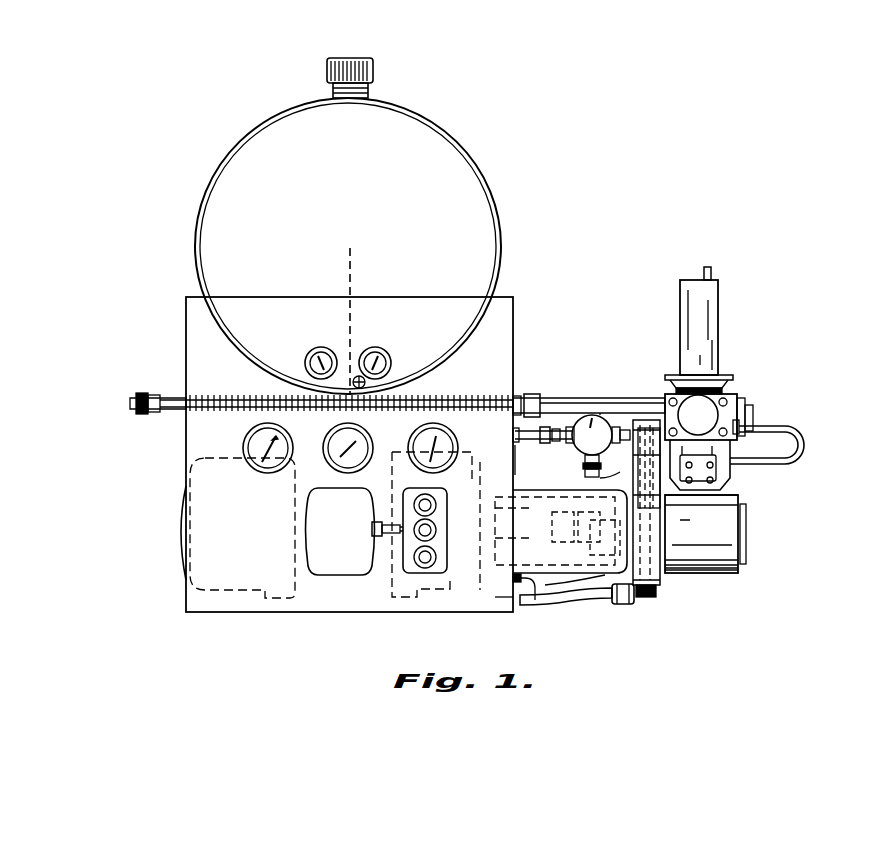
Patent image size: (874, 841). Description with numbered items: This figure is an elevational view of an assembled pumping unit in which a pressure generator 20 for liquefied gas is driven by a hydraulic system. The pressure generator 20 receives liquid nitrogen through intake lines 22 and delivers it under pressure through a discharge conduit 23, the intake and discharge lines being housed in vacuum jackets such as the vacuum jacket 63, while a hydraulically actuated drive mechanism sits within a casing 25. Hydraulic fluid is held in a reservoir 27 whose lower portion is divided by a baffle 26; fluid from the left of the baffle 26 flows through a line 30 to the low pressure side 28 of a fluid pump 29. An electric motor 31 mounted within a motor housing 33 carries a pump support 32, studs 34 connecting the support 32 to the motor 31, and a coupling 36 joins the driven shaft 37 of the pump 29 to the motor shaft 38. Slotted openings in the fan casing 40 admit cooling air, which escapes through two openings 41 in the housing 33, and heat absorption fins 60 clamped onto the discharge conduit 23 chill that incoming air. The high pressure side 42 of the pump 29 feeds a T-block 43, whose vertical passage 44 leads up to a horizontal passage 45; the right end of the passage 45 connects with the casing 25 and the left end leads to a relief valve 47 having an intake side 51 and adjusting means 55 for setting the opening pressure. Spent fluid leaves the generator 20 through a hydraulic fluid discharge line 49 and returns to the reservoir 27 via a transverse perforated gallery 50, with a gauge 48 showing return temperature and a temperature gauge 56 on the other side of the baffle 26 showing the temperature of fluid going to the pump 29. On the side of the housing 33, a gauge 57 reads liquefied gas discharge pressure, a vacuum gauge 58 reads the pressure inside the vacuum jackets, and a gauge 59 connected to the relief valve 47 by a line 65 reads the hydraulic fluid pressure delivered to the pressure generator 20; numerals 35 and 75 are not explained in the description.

The pressure generator 20 is at (737, 372).
The intake lines 22 is at (710, 269).
The discharge conduit 23 is at (148, 398).
The casing 25 is at (741, 418).
The baffle 26 is at (352, 262).
The reservoir 27 is at (443, 127).
The low pressure side 28 is at (656, 576).
The fluid pump 29 is at (712, 497).
The line 30 is at (538, 604).
The electric motor 31 is at (342, 574).
The pump support 32 is at (543, 600).
The motor housing 33 is at (230, 612).
The studs 34 is at (518, 598).
The fitting 35 is at (652, 590).
The coupling 36 is at (561, 531).
The driven shaft 37 is at (575, 606).
The shaft 38 is at (500, 598).
The fan casing 40 is at (180, 539).
The openings 41 is at (197, 297).
The high pressure side 42 is at (685, 510).
The T-block 43 is at (622, 470).
The vertical passage 44 is at (713, 470).
The horizontal passage 45 is at (646, 432).
The relief valve 47 is at (590, 417).
The gauge 48 is at (384, 362).
The hydraulic fluid discharge line 49 is at (798, 426).
The transverse perforated gallery 50 is at (365, 382).
The intake side 51 is at (598, 412).
The adjusting means 55 is at (584, 471).
The temperature gauge 56 is at (316, 344).
The gauge 57 is at (243, 440).
The vacuum gauge 58 is at (342, 426).
The gauge 59 is at (446, 442).
The heat absorption fins 60 is at (210, 396).
The vacuum jacket 63 is at (698, 314).
The line 65 is at (516, 444).
The fitting 75 is at (740, 397).